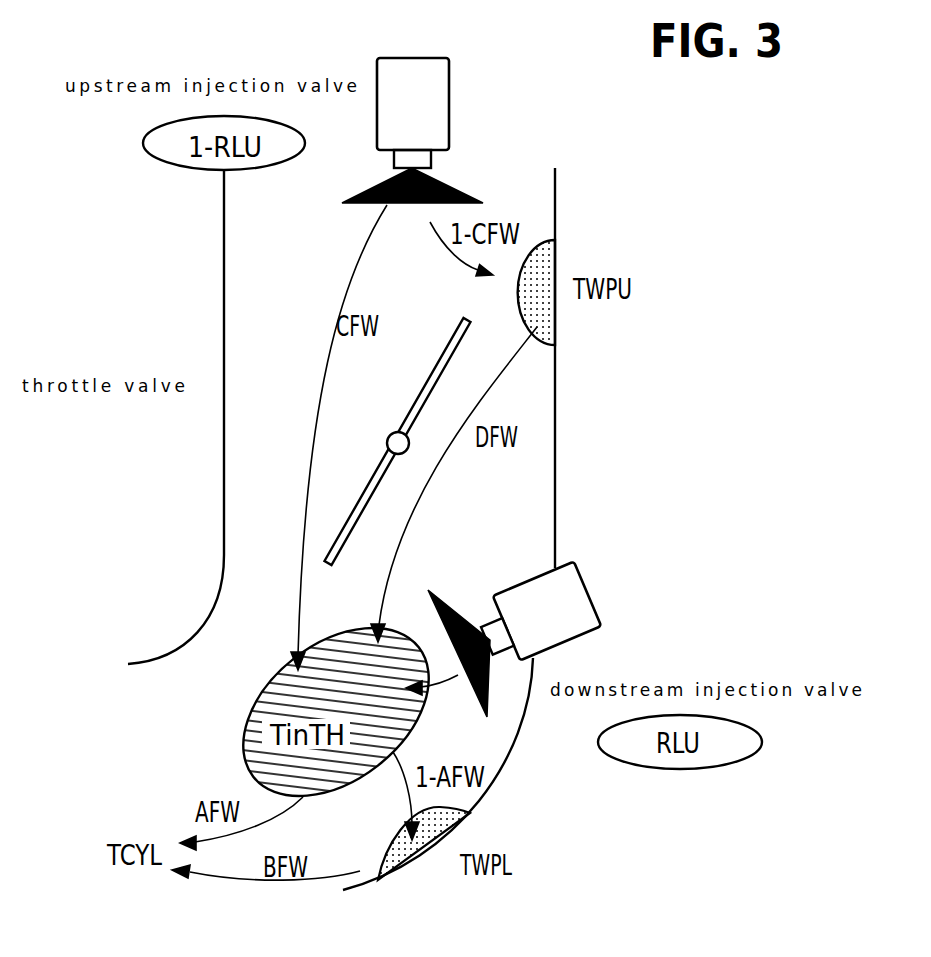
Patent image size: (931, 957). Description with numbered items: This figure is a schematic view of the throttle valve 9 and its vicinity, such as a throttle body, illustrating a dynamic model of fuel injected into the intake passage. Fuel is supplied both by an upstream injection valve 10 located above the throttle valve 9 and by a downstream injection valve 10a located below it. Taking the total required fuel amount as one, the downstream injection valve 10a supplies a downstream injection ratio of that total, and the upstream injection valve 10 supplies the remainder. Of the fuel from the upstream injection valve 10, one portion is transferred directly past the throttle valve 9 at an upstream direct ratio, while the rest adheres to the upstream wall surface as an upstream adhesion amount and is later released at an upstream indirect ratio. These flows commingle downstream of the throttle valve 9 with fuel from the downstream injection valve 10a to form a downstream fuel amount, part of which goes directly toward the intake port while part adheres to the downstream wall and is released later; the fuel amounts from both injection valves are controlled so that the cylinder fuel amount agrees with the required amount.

The upstream injection valve 10 is at (438, 104).
The downstream injection valve 10a is at (578, 592).
The throttle valve 9 is at (350, 518).